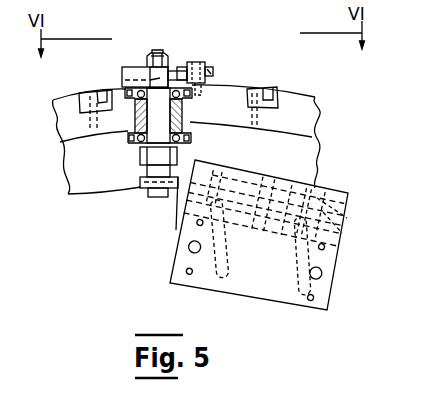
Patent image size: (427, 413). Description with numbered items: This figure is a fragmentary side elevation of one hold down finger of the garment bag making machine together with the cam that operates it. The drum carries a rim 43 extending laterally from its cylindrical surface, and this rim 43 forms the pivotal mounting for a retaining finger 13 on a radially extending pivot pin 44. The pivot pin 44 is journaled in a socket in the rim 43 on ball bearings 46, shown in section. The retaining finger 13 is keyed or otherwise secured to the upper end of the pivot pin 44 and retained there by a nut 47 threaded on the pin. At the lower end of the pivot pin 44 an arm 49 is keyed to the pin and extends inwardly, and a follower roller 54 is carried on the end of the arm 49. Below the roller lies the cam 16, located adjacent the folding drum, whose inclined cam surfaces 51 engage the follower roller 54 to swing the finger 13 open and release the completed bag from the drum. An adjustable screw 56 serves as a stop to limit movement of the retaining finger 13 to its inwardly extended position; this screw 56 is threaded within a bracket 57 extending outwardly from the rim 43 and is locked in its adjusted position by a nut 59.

The retaining finger 13 is at (133, 66).
The nut 47 is at (167, 56).
The adjustable screw 56 is at (187, 62).
The bracket 57 is at (205, 63).
The nut 59 is at (212, 78).
The pivot pin 44 is at (162, 114).
The rim 43 is at (178, 118).
The ball bearing 46 is at (177, 155).
The arm 49 is at (140, 154).
The follower roller 54 is at (144, 191).
The inclined cam surface 51 is at (190, 198).
The cam 16 is at (298, 308).